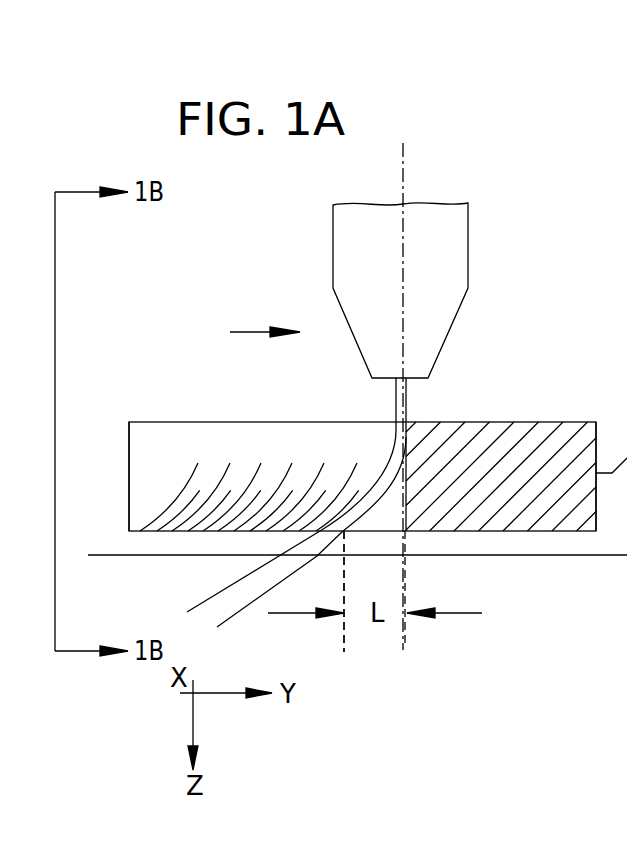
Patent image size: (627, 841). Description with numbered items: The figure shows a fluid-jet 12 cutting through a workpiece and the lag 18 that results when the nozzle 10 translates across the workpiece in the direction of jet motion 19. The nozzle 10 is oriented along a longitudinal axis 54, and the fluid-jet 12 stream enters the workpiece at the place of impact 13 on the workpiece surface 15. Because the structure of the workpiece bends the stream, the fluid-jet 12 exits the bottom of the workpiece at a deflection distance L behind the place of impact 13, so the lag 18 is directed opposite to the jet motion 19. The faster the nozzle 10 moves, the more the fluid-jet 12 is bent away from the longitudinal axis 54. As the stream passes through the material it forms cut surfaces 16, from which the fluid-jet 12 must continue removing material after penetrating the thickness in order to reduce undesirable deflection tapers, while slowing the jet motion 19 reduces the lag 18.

The nozzle 10 is at (333, 254).
The fluid-jet 12 is at (392, 402).
The place of impact 13 is at (410, 420).
The workpiece surface 15 is at (510, 421).
The cut surfaces 16 is at (148, 443).
The lag 18 is at (378, 632).
The jet motion 19 is at (252, 332).
The longitudinal axis 54 is at (400, 168).